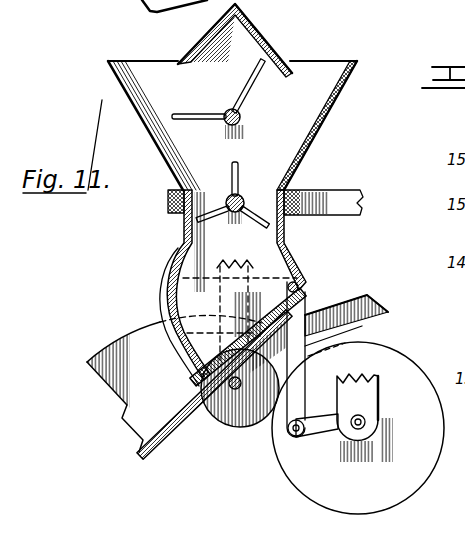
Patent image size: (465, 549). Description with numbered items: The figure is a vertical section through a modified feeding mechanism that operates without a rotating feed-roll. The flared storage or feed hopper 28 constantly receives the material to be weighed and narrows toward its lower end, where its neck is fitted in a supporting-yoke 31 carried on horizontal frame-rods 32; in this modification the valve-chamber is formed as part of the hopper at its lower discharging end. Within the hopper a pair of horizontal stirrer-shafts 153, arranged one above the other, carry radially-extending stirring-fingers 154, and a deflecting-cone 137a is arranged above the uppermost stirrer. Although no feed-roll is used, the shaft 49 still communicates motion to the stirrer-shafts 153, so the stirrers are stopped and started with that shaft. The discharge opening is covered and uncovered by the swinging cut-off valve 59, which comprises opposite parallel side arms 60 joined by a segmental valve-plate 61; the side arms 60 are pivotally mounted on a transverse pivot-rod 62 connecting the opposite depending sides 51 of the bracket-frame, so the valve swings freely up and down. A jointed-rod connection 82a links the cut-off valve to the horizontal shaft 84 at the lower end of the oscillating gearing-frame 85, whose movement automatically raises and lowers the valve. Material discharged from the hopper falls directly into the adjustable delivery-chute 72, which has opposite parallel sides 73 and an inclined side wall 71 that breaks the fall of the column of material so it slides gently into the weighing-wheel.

The deflecting-cone 137a is at (270, 34).
The stirrer-shaft 153 is at (228, 112).
The stirring-finger 154 is at (190, 120).
The storage or feed hopper 28 is at (303, 125).
The frame-rod 32 is at (352, 192).
The supporting-yoke 31 is at (295, 216).
The side arm 60 is at (294, 268).
The pivot-rod 62 is at (307, 286).
The depending side 51 is at (353, 304).
The segmental valve-plate 61 is at (168, 283).
The swinging cut-off valve 59 is at (163, 301).
The side 73 is at (122, 349).
The delivery-chute 72 is at (126, 387).
The inclined side wall 71 is at (173, 438).
The roll-shaft 49 is at (232, 390).
The jointed-rod connection 82a is at (298, 393).
The oscillating gearing-frame 85 is at (365, 418).
The horizontal shaft 84 is at (368, 420).